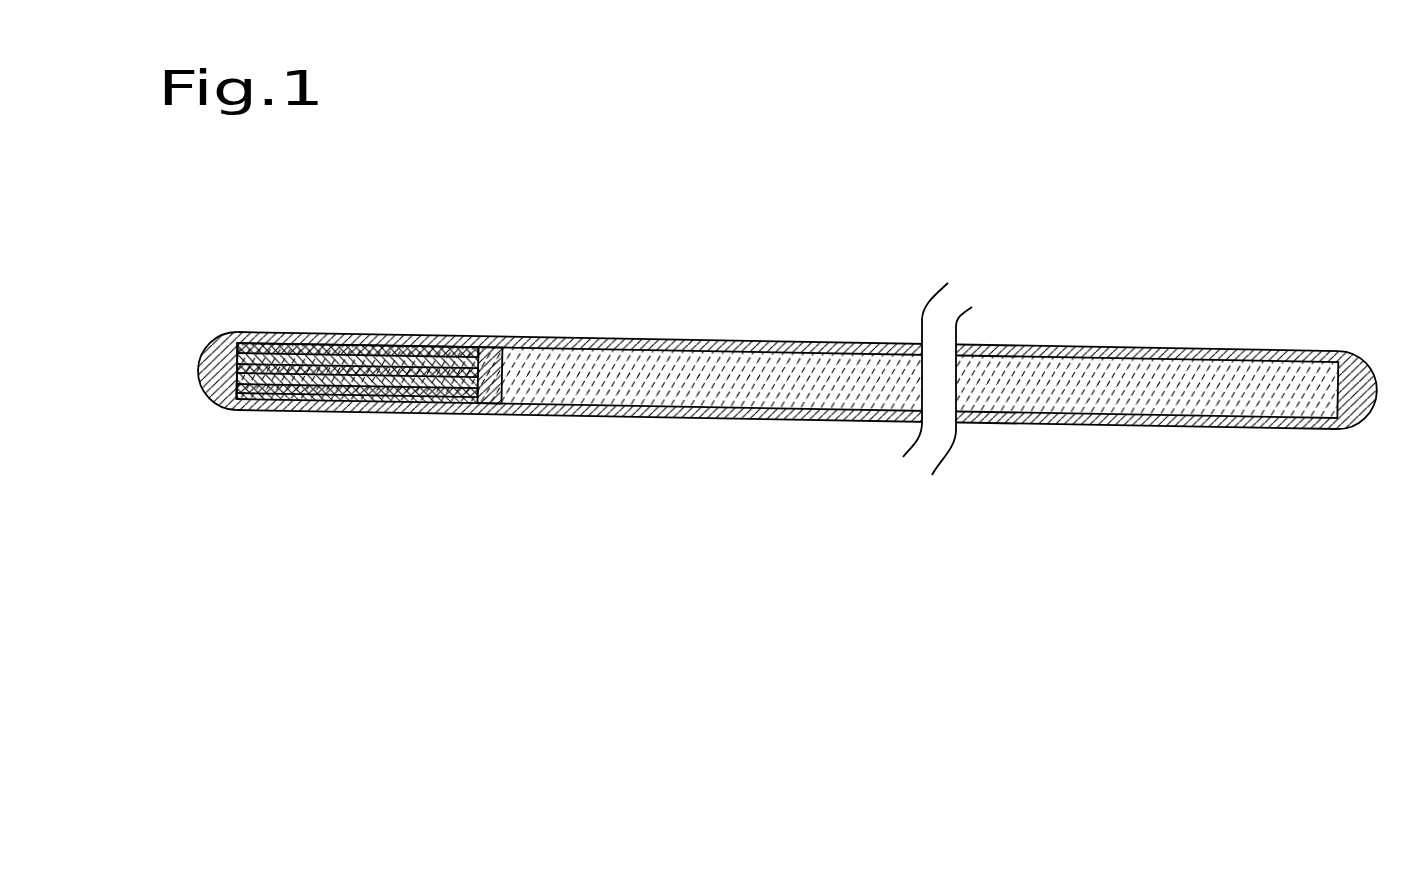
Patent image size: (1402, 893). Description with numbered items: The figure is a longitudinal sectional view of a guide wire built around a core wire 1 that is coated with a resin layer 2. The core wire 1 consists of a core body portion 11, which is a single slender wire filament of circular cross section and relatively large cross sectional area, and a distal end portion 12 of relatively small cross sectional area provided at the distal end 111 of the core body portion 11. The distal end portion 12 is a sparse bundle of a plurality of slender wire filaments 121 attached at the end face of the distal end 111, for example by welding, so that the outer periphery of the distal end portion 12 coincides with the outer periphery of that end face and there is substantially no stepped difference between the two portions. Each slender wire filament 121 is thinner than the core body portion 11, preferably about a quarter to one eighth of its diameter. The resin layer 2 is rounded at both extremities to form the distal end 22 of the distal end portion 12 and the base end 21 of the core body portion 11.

The core wire 1 is at (788, 402).
The resin layer 2 is at (708, 340).
The core body portion 11 is at (788, 374).
The distal end portion 12 is at (358, 372).
The base end 21 is at (1375, 418).
The distal end 22 is at (207, 393).
The distal end of the core body portion 111 is at (485, 362).
The slender wire filaments 121 is at (396, 388).